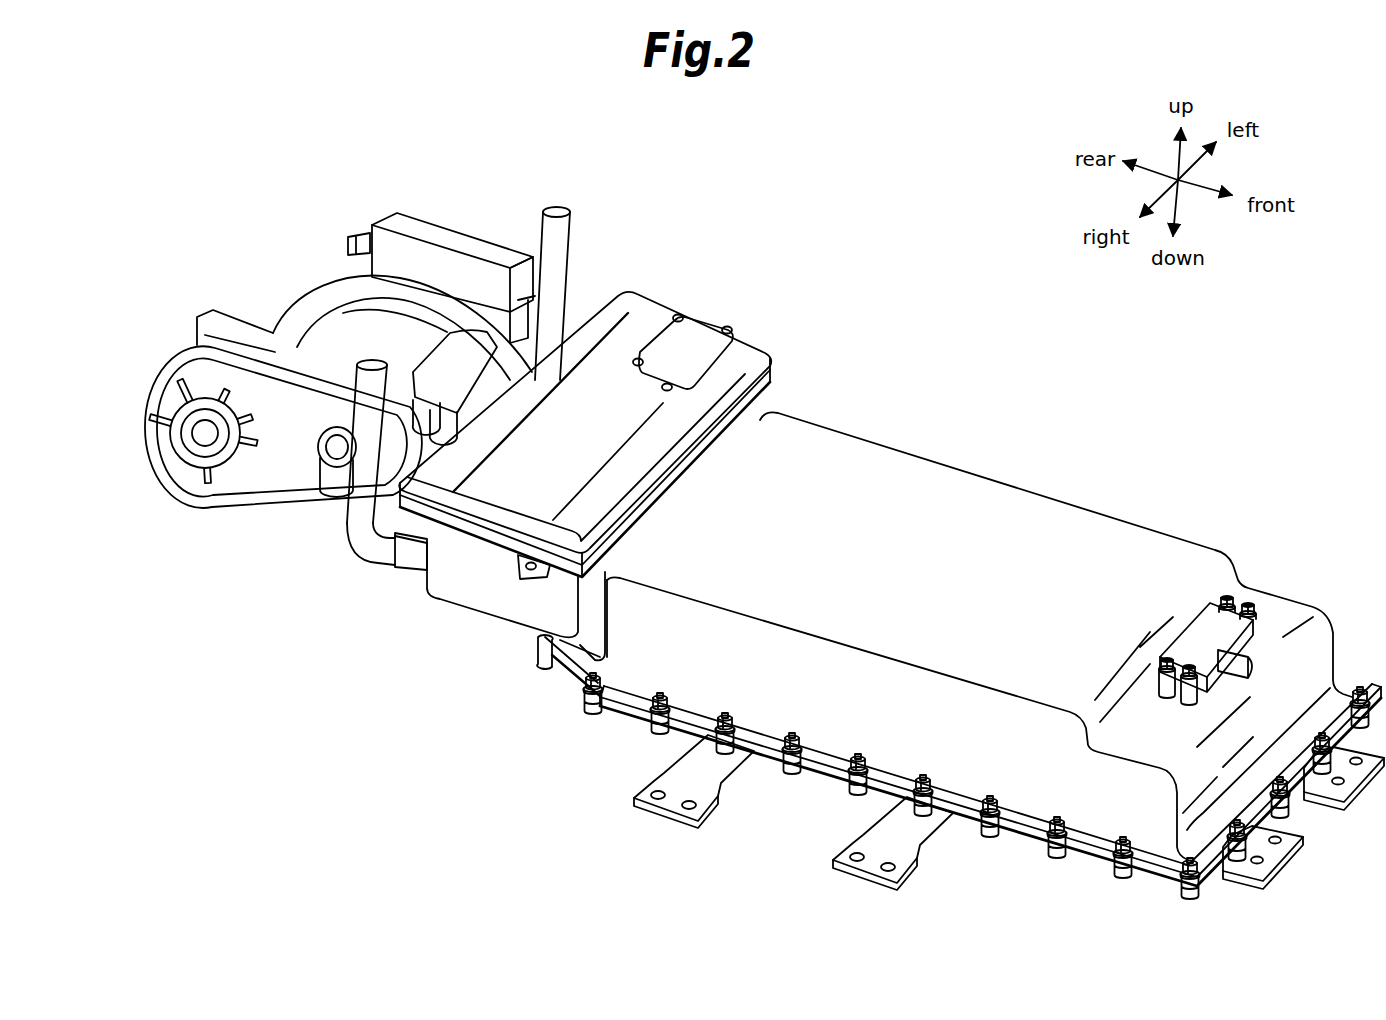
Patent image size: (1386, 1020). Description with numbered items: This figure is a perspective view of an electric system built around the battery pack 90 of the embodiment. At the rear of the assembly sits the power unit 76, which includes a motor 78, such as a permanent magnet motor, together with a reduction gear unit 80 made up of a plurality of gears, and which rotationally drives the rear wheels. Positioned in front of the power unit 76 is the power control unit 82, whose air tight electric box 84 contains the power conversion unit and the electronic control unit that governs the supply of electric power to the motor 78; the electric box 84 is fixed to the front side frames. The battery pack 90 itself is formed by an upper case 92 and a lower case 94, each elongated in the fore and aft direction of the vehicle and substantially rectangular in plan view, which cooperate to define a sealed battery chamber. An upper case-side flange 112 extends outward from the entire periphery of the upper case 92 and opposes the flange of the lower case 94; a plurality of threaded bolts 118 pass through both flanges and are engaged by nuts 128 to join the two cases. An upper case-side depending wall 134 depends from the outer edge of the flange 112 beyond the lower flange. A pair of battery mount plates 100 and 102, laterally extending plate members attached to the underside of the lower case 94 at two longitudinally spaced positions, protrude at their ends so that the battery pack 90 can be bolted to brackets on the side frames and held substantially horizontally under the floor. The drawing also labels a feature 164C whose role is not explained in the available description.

The power unit 76 is at (327, 283).
The motor 78 is at (298, 327).
The reduction gear unit 80 is at (186, 364).
The power control unit 82 is at (651, 307).
The electric box 84 is at (750, 337).
The battery pack 90 is at (961, 433).
The upper case 92 is at (1075, 515).
The lower case 94 is at (1013, 838).
The battery mount plate 100 is at (870, 866).
The battery mount plate 102 is at (671, 793).
The upper case-side flange 112 is at (1027, 817).
The threaded bolts 118 is at (926, 775).
The nuts 128 is at (935, 790).
The upper case-side depending wall 134 is at (1092, 850).
The side face of cover 164C is at (782, 722).